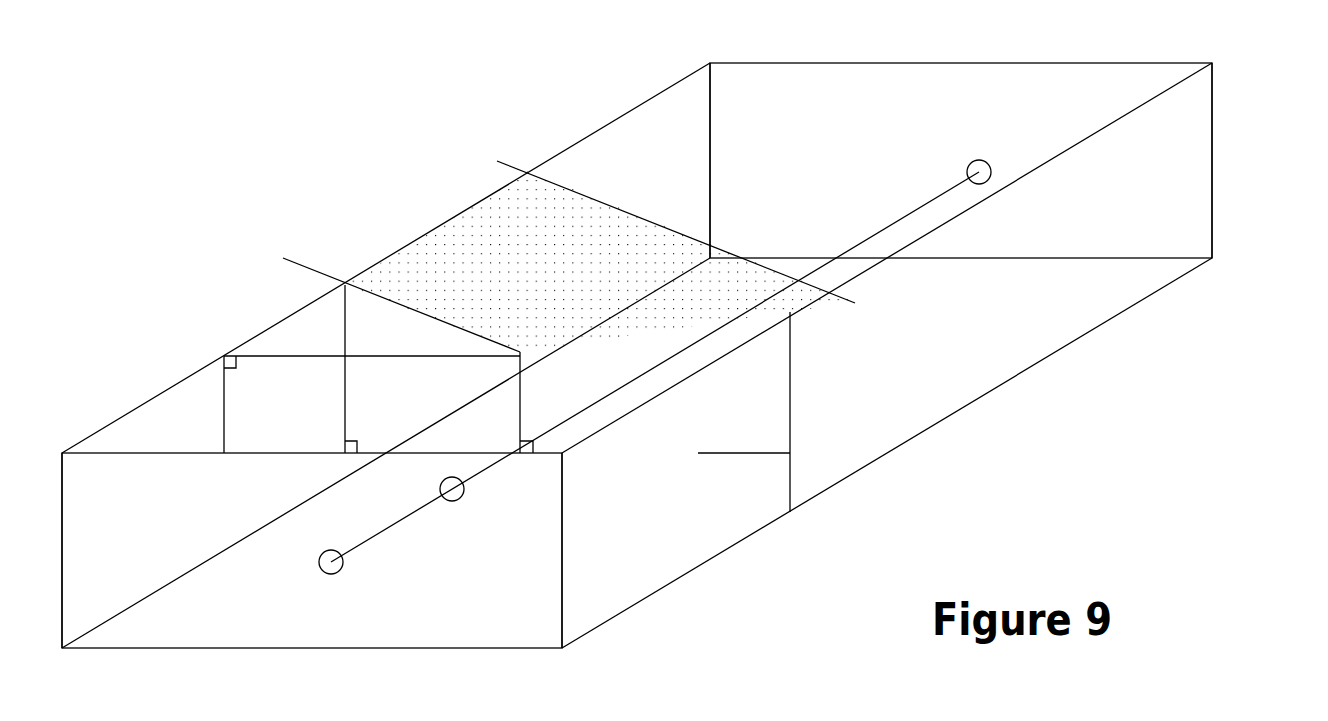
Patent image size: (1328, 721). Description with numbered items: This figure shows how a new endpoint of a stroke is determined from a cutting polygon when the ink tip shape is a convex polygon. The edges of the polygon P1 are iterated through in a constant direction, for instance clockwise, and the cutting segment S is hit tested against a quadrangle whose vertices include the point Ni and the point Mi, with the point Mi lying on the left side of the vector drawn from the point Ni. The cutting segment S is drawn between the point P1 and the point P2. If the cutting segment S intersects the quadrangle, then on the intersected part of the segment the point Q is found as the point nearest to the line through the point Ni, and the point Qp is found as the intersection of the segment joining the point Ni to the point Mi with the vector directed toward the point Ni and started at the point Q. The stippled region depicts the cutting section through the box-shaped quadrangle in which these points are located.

The edge point N_i of the box Ni is at (40, 541).
The edge point M_i of the box Mi is at (714, 138).
The projected point Q' on the section plane Qp is at (244, 369).
The point Q on the section plane Q is at (532, 382).
The sample point S on the line P1-P2 S is at (461, 503).
The first end point P1 of the line segment P1 is at (330, 582).
The second end point P2 of the line segment P2 is at (943, 150).